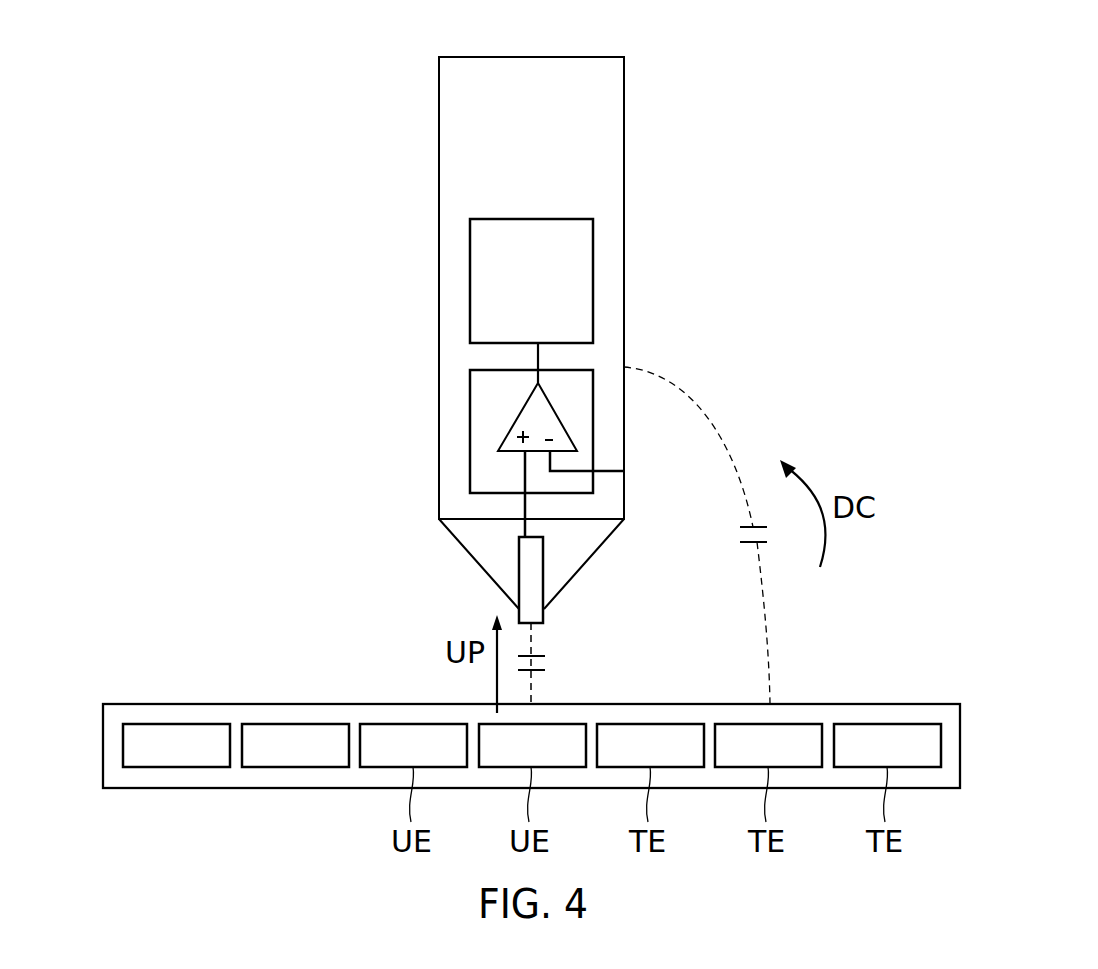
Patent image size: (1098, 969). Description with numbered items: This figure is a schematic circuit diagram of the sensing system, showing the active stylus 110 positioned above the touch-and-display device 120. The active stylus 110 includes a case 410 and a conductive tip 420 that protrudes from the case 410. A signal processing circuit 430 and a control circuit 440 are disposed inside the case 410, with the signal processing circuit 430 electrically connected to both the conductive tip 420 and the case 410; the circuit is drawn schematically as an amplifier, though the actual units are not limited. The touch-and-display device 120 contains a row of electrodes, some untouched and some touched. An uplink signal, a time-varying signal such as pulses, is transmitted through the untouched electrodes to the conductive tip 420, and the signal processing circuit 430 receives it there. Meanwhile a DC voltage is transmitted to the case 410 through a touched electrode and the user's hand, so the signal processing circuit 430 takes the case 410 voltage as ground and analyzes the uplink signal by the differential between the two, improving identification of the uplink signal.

The active stylus 110 is at (593, 57).
The case 410 is at (624, 127).
The control circuit 440 is at (470, 283).
The signal processing circuit 430 is at (470, 430).
The conductive tip 420 is at (544, 615).
The touch-and-display device 120 is at (960, 748).